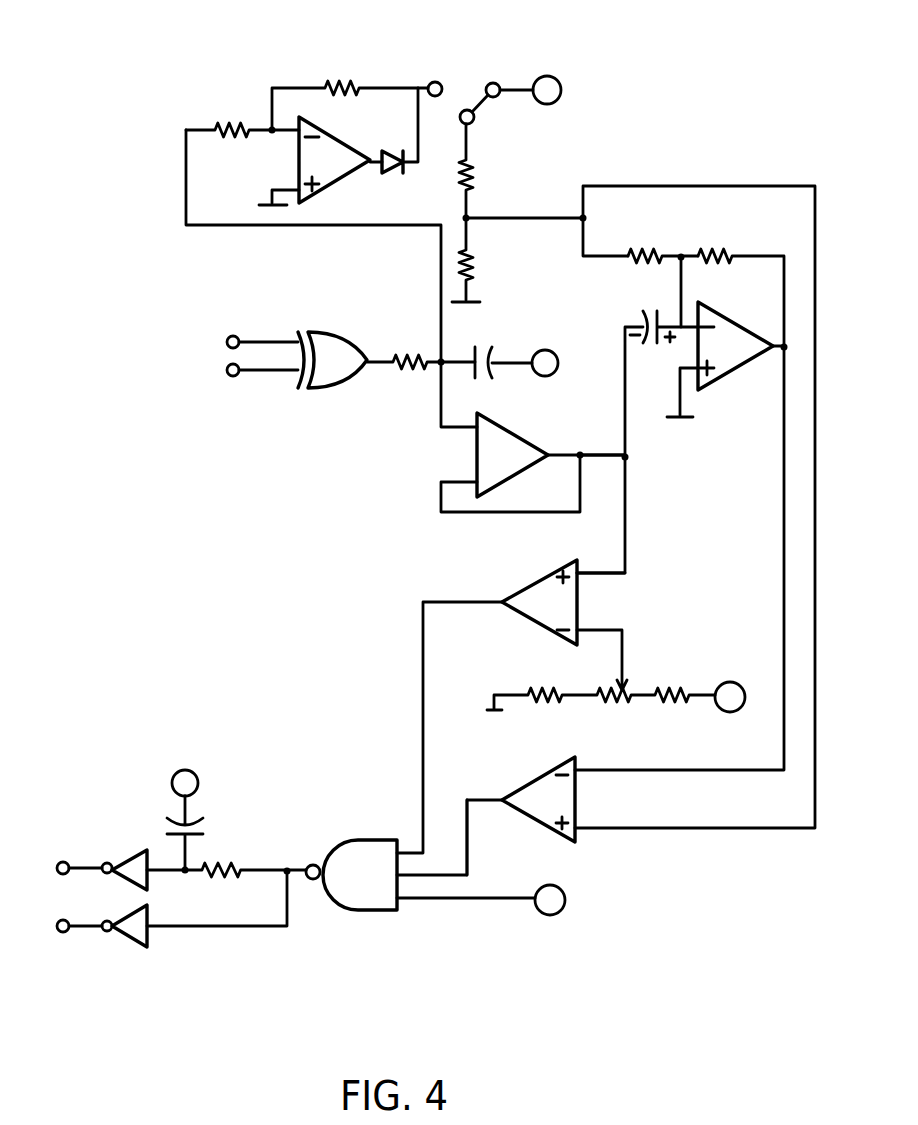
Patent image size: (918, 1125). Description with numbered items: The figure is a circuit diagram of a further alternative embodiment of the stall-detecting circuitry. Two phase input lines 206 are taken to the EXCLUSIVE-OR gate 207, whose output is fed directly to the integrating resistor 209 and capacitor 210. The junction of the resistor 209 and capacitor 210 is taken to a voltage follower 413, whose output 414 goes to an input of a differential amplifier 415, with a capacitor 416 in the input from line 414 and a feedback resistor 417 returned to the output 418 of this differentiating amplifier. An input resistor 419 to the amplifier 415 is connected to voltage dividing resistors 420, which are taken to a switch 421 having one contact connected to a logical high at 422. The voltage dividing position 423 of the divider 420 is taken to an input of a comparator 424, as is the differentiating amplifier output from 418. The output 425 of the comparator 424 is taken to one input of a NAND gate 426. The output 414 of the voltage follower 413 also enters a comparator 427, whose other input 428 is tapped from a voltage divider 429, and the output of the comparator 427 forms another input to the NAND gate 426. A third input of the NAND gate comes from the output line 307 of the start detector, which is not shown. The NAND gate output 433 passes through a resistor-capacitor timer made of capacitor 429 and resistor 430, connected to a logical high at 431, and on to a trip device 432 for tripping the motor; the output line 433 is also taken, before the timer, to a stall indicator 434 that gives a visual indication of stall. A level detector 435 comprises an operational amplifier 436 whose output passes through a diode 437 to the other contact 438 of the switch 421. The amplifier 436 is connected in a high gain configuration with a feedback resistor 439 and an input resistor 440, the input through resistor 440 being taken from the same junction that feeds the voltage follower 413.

The two phase input lines 206 is at (240, 340).
The EXCLUSIVE-OR gate 207 is at (333, 333).
The integrating resistor 209 is at (400, 372).
The capacitor 210 is at (493, 355).
The output line of the start detector 307 is at (567, 898).
The voltage follower 413 is at (507, 430).
The output of the voltage follower 414 is at (581, 455).
The differential amplifier 415 is at (702, 393).
The capacitor 416 is at (643, 313).
The feedback resistor 417 is at (717, 250).
The output of the differentiating amplifier 418 is at (790, 355).
The input resistor 419 is at (628, 248).
The voltage dividing resistors 420 is at (477, 185).
The switch 421 is at (493, 117).
The logical high 422 is at (560, 73).
The voltage dividing position 423 is at (583, 218).
The comparator 424 is at (542, 772).
The output of the comparator 425 is at (477, 796).
The NAND gate 426 is at (357, 840).
The comparator 427 is at (527, 582).
The input tapped from voltage divider 428 is at (610, 628).
The voltage divider / capacitor 429 is at (688, 662).
The resistor 430 is at (245, 868).
The logical high 431 is at (193, 770).
The trip device 432 is at (65, 861).
The NAND gate output line 433 is at (190, 930).
The stall indicator 434 is at (63, 933).
The level detector 435 is at (198, 93).
The operational amplifier 436 is at (338, 147).
The diode 437 is at (387, 177).
The other contact of the switch 438 is at (433, 82).
The feedback resistor 439 is at (325, 86).
The input resistor 440 is at (232, 118).